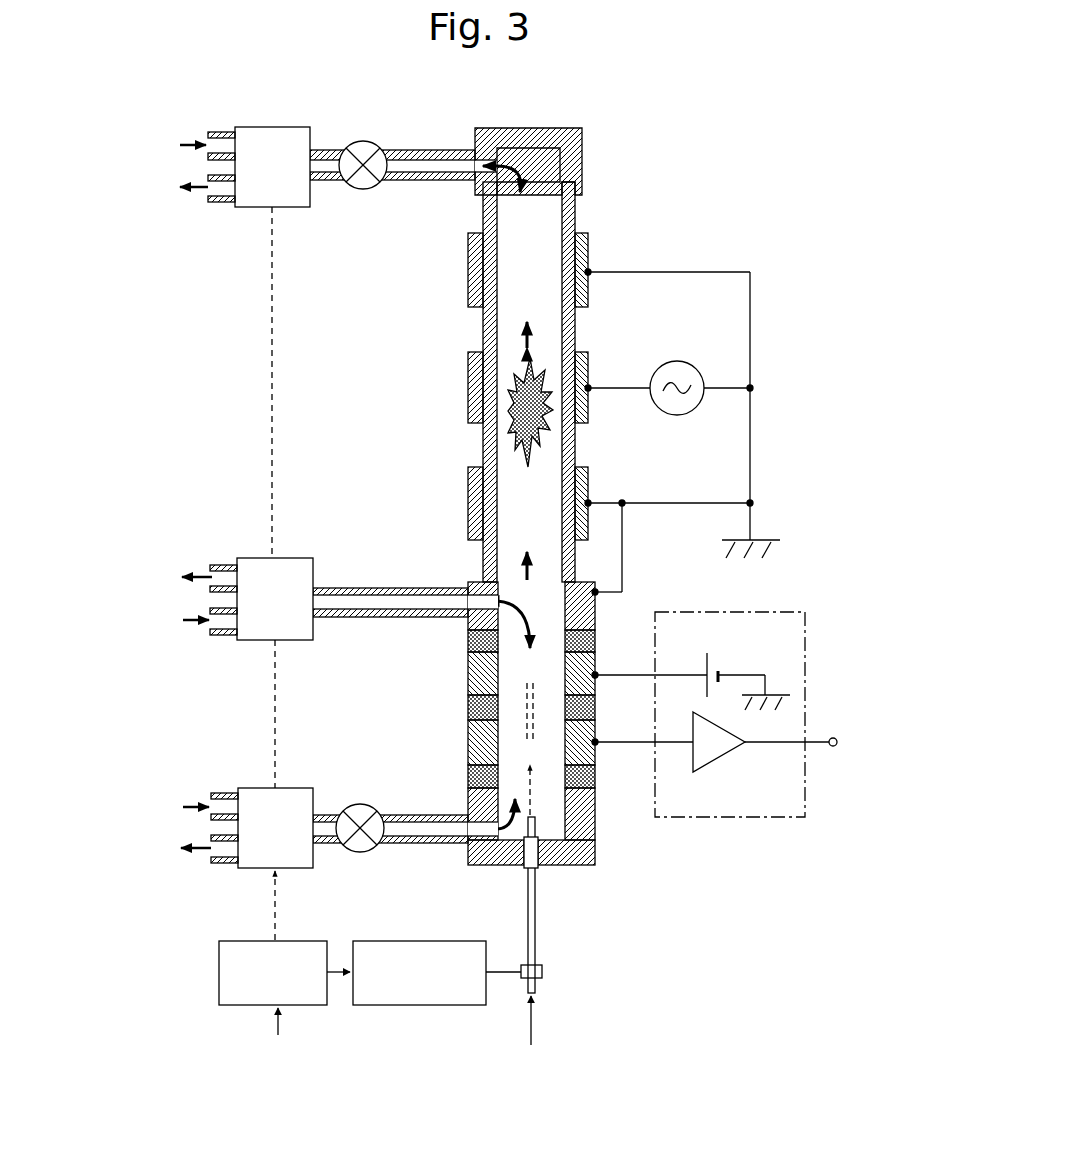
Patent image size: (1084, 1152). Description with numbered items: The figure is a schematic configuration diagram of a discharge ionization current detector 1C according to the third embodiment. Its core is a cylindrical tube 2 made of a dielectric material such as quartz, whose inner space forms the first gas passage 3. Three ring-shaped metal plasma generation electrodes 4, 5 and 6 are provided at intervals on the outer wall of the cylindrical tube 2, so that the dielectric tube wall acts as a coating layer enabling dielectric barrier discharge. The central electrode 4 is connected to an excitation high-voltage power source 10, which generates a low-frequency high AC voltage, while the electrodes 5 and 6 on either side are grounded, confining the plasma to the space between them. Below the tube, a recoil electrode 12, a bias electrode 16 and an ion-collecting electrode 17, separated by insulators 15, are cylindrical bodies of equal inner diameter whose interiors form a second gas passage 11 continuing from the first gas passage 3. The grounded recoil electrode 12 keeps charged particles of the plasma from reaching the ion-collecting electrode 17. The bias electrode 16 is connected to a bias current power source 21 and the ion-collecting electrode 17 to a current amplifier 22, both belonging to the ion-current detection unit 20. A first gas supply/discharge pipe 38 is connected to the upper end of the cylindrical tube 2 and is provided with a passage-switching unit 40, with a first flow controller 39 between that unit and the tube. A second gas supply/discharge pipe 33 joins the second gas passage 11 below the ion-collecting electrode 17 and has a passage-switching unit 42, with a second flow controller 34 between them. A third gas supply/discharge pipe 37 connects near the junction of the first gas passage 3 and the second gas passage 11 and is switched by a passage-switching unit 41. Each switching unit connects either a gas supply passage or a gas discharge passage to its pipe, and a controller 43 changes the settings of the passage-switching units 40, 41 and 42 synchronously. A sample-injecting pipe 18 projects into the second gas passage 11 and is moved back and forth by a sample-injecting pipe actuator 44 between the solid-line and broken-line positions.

The discharge ionization current detector 1C is at (183, 80).
The cylindrical tube 2 is at (578, 222).
The first gas passage 3 is at (512, 340).
The plasma generation electrode 4 is at (468, 375).
The plasma generation electrode 5 is at (468, 480).
The plasma generation electrode 6 is at (468, 254).
The excitation high-voltage power source 10 is at (681, 361).
The second gas passage 11 is at (558, 643).
The recoil electrode 12 is at (470, 586).
The insulator 15 is at (468, 643).
The bias electrode 16 is at (597, 669).
The ion-collecting electrode 17 is at (598, 739).
The sample-injecting pipe 18 is at (538, 828).
The ion-current detection unit 20 is at (753, 714).
The bias current power source 21 is at (720, 673).
The current amplifier 22 is at (718, 757).
The second gas supply/discharge pipe 33 is at (405, 808).
The second flow controller 34 is at (359, 801).
The third gas supply/discharge pipe 37 is at (377, 590).
The first gas supply/discharge pipe 38 is at (392, 149).
The first flow controller 39 is at (355, 143).
The passage-switching unit 40 is at (247, 208).
The passage-switching unit 41 is at (253, 558).
The passage-switching unit 42 is at (255, 788).
The controller 43 is at (248, 941).
The sample-injecting pipe actuator 44 is at (430, 1006).